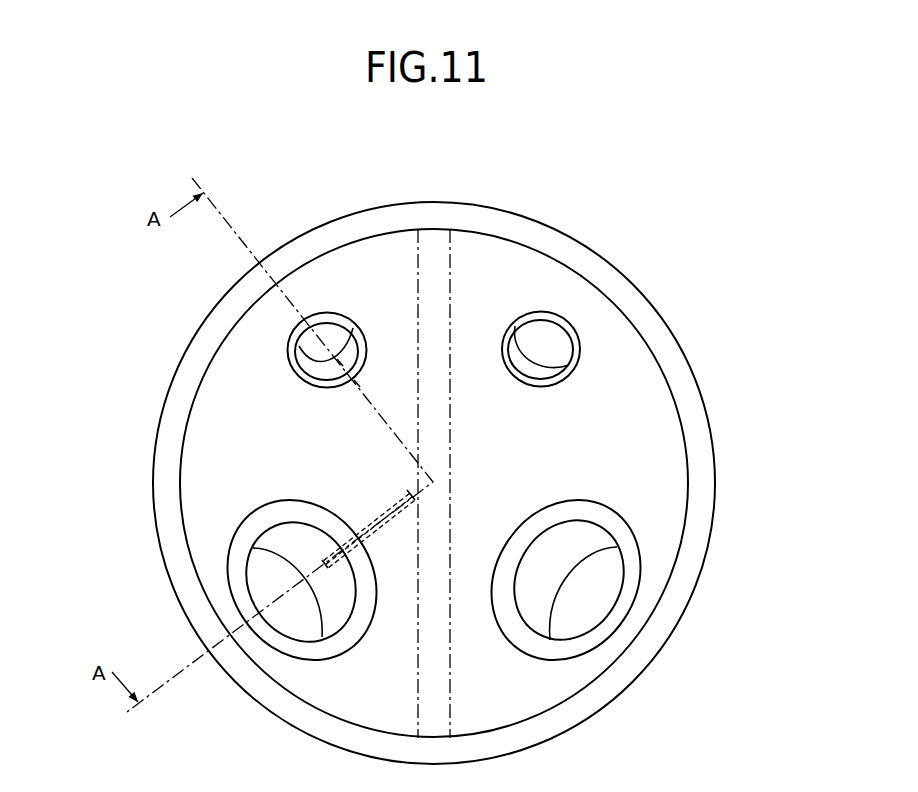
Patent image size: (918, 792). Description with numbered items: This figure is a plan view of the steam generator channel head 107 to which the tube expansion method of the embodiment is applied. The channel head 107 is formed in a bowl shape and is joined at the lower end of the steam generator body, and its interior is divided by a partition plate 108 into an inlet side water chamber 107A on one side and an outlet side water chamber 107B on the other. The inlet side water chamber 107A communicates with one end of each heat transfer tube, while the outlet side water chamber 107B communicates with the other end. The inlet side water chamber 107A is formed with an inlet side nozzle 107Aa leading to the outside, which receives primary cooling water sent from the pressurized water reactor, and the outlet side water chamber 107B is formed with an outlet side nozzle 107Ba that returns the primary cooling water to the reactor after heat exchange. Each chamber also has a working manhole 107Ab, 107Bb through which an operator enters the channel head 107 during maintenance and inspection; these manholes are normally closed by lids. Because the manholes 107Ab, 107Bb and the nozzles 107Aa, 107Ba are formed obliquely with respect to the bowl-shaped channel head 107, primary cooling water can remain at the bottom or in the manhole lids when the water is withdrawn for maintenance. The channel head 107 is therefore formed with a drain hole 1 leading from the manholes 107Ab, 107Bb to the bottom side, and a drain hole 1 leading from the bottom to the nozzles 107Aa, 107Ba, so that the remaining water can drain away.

The drain hole 1 is at (338, 360).
The channel head 107 is at (673, 333).
The inlet side water chamber 107A is at (210, 470).
The outlet side water chamber 107B is at (655, 470).
The inlet side nozzle 107Aa is at (333, 585).
The working manhole 107Ab is at (306, 354).
The outlet side nozzle 107Ba is at (533, 587).
The working manhole 107Bb is at (533, 353).
The partition plate 108 is at (450, 265).